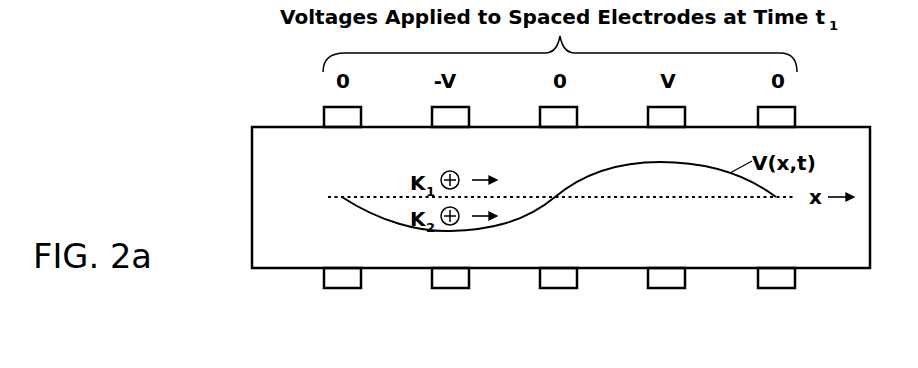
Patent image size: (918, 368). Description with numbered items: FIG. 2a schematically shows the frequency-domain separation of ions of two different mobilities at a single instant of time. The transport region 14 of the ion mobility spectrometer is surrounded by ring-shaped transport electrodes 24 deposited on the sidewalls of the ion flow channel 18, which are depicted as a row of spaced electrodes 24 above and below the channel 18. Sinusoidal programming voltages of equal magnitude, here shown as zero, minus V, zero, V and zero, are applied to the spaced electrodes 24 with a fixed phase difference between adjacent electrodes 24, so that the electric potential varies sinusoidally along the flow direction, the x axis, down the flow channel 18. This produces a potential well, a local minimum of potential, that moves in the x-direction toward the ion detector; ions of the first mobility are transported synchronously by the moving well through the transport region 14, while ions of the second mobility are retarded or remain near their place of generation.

The transport region 14 is at (668, 199).
The ion flow channel 18 is at (290, 125).
The transport electrodes 24 is at (432, 272).